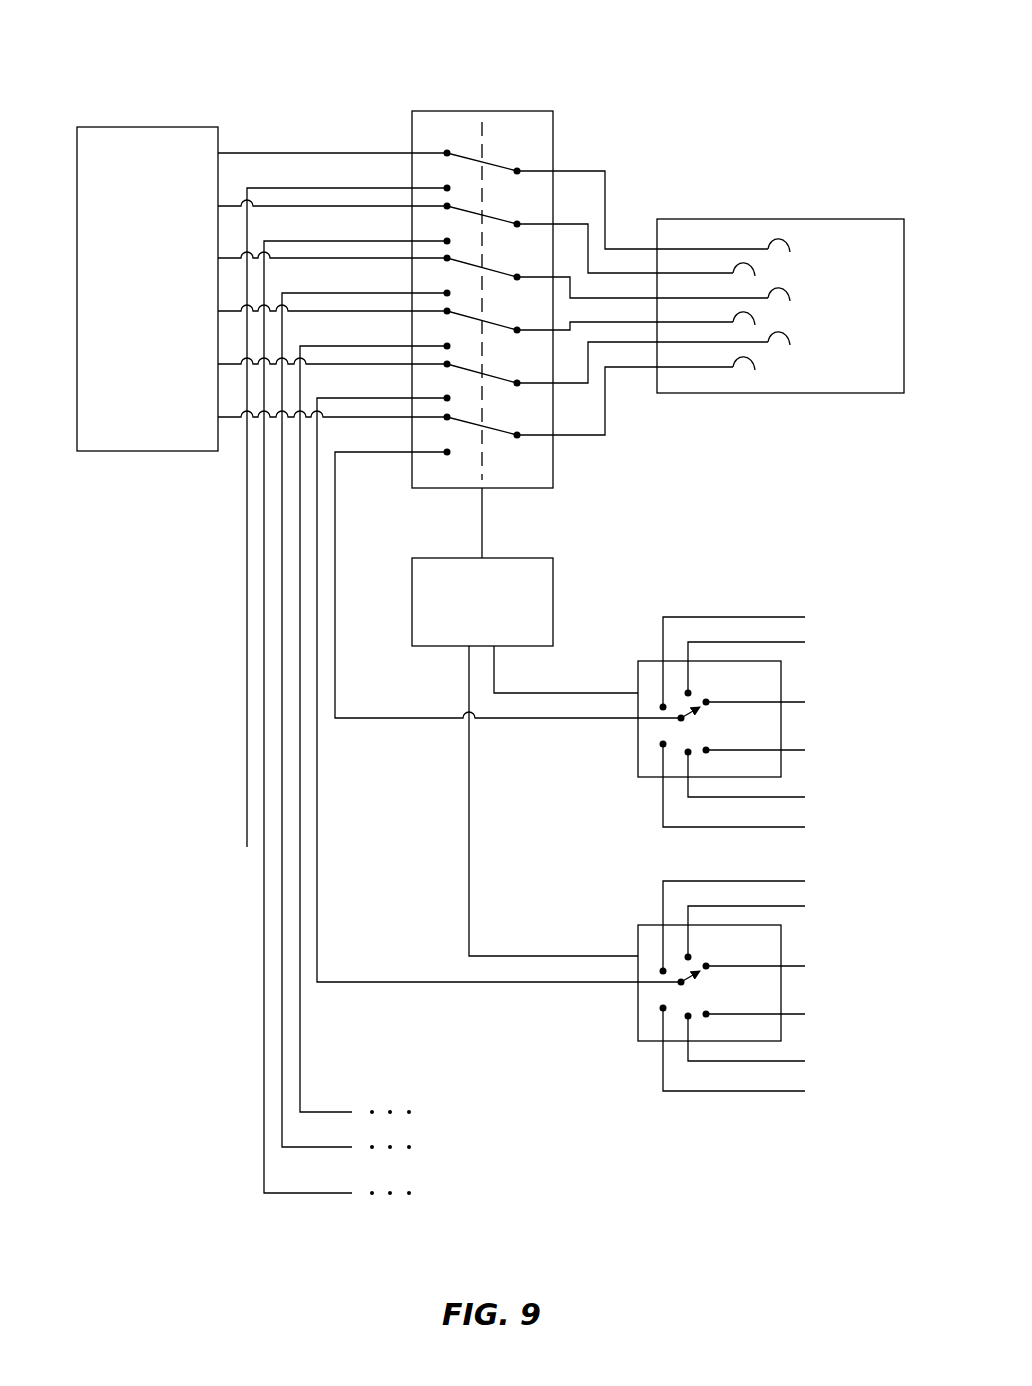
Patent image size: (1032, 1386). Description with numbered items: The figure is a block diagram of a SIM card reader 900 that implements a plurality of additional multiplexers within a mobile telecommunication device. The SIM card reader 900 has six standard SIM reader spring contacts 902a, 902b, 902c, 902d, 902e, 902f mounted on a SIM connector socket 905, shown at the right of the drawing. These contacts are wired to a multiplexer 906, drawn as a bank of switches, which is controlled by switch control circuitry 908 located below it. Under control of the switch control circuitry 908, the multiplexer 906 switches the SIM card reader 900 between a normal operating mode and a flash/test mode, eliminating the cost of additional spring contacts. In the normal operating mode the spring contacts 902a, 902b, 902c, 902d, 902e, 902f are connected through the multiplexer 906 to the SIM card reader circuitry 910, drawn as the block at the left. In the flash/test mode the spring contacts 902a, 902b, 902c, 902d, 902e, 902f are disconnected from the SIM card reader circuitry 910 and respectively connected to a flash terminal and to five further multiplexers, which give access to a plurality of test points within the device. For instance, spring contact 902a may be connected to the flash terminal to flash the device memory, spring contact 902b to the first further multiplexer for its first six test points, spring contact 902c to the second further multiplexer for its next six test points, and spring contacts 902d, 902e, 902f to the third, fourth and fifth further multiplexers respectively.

The SIM card reader 900 is at (711, 52).
The SIM card reader circuitry 910 is at (157, 127).
The multiplexer 906 is at (495, 111).
The switch control circuitry 908 is at (553, 608).
The SIM connector socket 905 is at (866, 394).
The SIM reader spring contact 902a is at (779, 238).
The SIM reader spring contact 902b is at (744, 262).
The SIM reader spring contact 902c is at (781, 288).
The SIM reader spring contact 902d is at (741, 313).
The SIM reader spring contact 902e is at (779, 333).
The SIM reader spring contact 902f is at (743, 358).